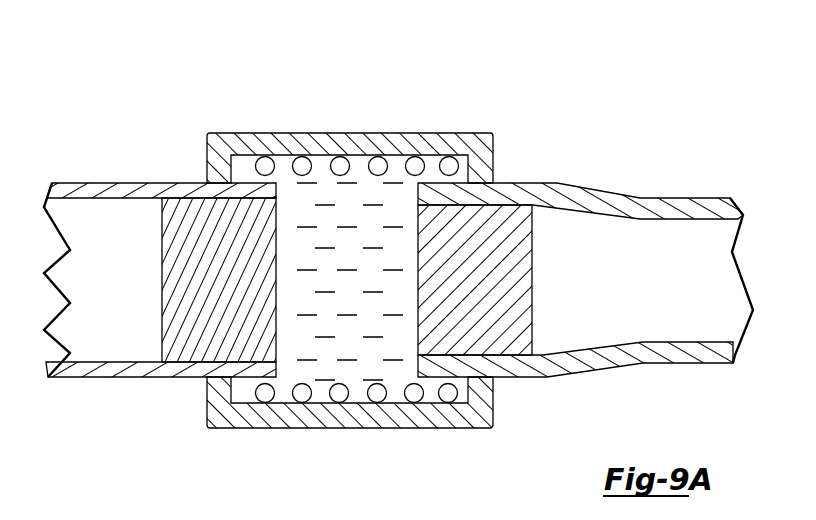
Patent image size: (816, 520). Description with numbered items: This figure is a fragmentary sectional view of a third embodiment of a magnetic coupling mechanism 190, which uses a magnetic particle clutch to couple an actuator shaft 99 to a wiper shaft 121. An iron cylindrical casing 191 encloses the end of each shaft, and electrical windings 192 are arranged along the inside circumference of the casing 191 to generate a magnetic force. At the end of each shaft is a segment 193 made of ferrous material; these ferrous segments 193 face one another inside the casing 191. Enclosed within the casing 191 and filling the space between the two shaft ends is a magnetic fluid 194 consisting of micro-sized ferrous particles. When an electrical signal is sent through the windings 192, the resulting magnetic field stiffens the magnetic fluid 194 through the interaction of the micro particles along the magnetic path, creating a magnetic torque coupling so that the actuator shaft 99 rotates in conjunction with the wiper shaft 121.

The actuator shaft 99 is at (120, 230).
The wiper shaft 121 is at (675, 250).
The magnetic coupling mechanism 190 is at (555, 101).
The casing 191 is at (220, 147).
The electrical windings 192 is at (342, 165).
The segment 193 is at (195, 322).
The magnetic fluid 194 is at (328, 232).